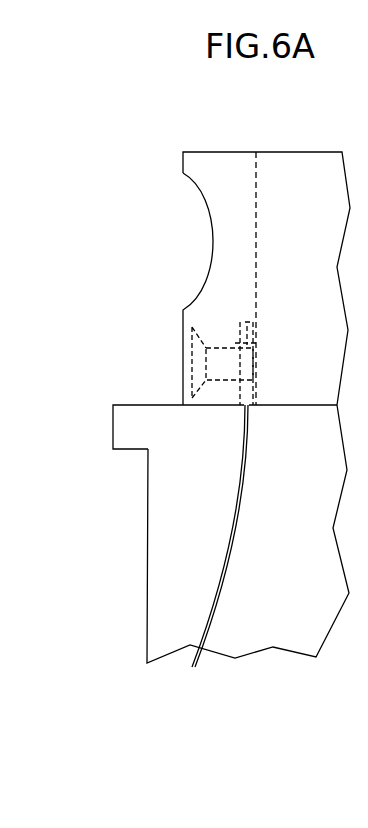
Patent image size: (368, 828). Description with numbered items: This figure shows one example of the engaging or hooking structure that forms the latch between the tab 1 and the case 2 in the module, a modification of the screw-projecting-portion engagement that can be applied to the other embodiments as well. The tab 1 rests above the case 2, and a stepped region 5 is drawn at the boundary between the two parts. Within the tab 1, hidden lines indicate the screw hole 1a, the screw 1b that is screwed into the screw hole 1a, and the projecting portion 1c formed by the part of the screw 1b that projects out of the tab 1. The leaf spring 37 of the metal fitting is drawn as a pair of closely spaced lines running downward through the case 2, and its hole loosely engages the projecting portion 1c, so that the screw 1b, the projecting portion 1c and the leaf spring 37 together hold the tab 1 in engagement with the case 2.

The tab 1 is at (220, 222).
The screw hole 1a is at (183, 337).
The screw 1b is at (206, 363).
The projecting portion 1c is at (256, 343).
The shoulder step 5 is at (118, 421).
The case 2 is at (156, 543).
The leaf spring 37 is at (208, 627).